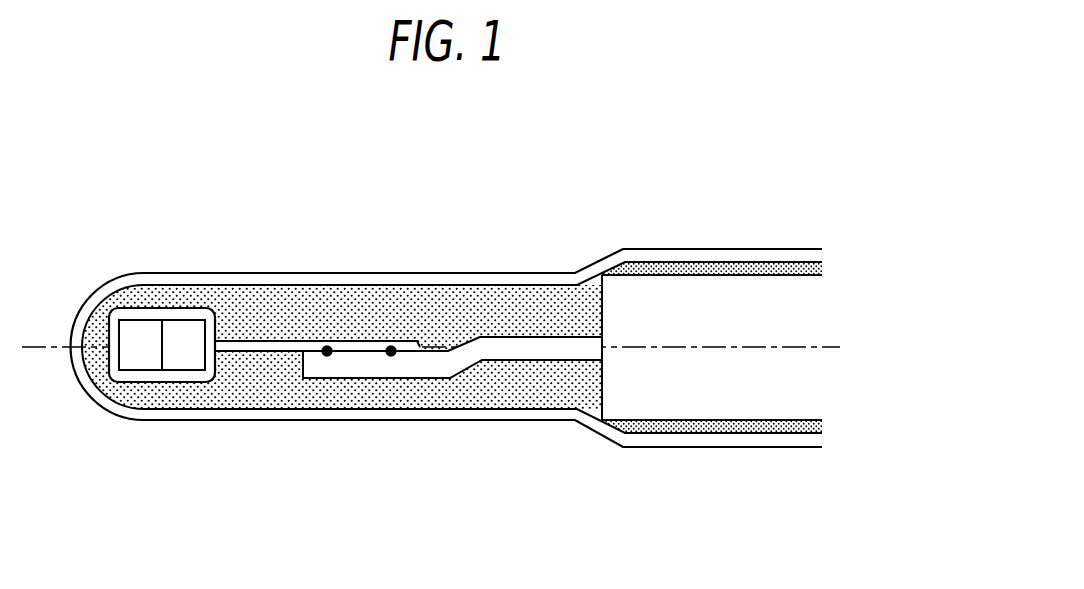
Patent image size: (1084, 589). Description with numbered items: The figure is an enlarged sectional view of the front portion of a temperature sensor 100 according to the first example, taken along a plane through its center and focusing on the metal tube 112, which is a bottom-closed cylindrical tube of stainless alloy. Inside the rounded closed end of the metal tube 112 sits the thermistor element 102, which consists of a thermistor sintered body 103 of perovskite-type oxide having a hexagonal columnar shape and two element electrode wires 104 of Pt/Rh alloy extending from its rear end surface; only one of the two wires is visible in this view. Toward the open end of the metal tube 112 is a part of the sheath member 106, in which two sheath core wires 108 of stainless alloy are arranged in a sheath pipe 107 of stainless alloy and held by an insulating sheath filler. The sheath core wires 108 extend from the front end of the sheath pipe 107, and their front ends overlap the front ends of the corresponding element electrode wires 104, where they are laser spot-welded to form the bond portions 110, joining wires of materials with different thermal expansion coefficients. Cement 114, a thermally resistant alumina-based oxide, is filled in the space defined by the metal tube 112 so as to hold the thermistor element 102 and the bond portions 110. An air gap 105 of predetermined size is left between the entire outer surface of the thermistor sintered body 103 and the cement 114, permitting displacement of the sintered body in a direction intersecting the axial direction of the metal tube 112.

The temperature sensor 100 is at (146, 216).
The thermistor element 102 is at (145, 477).
The thermistor sintered body 103 is at (153, 363).
The element electrode wire 104 is at (247, 362).
The air gap 105 is at (115, 362).
The sheath member 106 is at (527, 500).
The sheath pipe 107 is at (677, 408).
The sheath core wire 108 is at (548, 362).
The bond portion 110 is at (391, 355).
The metal tube 112 is at (425, 282).
The cement 114 is at (303, 298).